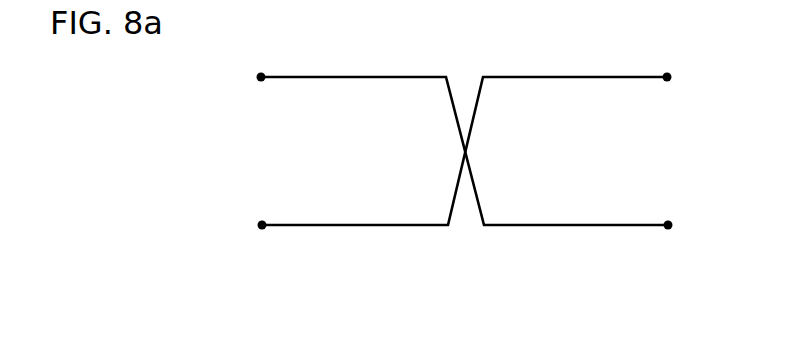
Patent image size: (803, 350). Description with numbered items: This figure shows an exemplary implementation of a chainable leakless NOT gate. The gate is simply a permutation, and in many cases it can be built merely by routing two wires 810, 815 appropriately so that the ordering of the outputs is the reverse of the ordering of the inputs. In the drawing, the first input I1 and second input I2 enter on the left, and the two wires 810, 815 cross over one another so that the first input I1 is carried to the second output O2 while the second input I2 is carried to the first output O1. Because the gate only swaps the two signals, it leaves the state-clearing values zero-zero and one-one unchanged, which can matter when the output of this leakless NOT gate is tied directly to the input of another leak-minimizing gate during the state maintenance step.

The wire 810 is at (310, 75).
The wire 815 is at (574, 75).
The first input port I1 is at (246, 79).
The second input port I2 is at (247, 227).
The first output port O1 is at (688, 81).
The second output port O2 is at (688, 229).